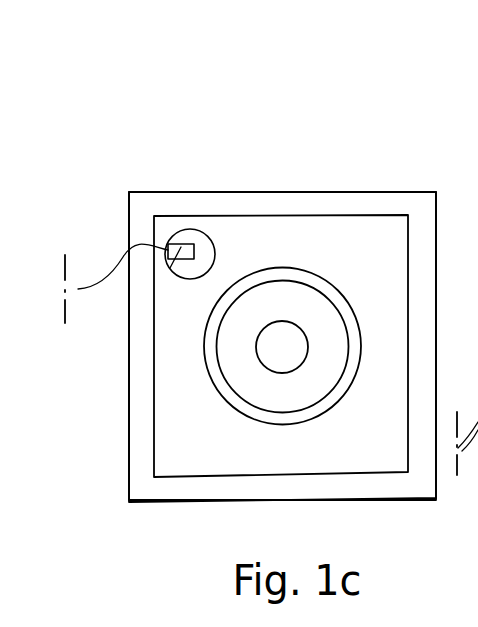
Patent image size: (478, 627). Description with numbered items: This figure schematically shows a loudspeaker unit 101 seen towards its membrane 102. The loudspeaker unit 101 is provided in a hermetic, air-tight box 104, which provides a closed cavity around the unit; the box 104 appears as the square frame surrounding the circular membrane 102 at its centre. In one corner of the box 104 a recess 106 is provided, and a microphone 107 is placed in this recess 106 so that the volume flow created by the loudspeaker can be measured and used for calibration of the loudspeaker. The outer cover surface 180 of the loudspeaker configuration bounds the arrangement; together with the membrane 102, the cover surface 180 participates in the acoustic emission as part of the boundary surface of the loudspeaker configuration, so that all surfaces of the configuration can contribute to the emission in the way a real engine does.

The loudspeaker unit 101 is at (325, 105).
The membrane 102 is at (322, 308).
The box 104 is at (256, 237).
The recess 106 is at (185, 240).
The microphone 107 is at (170, 275).
The cover surface 180 is at (199, 452).